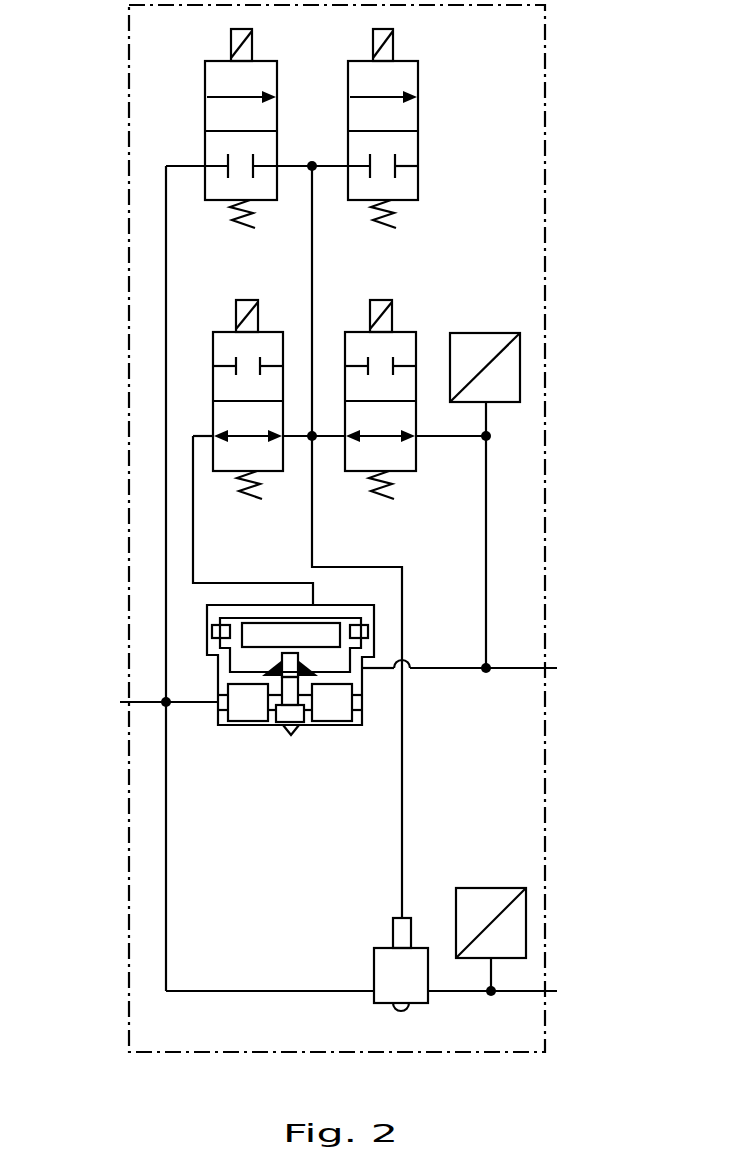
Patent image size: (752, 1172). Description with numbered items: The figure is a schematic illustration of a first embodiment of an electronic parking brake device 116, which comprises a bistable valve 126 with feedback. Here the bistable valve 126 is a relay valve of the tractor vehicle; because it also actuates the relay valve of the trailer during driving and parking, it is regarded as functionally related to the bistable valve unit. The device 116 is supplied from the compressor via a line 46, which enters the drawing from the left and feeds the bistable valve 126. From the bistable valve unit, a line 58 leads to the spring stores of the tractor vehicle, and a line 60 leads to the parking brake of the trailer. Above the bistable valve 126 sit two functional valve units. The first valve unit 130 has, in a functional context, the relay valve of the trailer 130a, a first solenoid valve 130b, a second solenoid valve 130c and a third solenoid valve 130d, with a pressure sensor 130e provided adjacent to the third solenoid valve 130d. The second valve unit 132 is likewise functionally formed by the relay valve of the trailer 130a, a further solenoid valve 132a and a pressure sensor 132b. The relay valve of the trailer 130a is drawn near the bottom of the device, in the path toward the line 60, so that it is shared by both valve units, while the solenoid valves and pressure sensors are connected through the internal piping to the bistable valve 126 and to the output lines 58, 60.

The electronic parking brake device 116 is at (110, 62).
The first valve unit 130 is at (110, 373).
The second valve unit 132 is at (296, 510).
The relay valve of the trailer 130a is at (387, 971).
The first solenoid valve 130b is at (218, 190).
The second solenoid valve 130c is at (220, 464).
The third solenoid valve 130d is at (405, 464).
The pressure sensor 130e is at (483, 333).
The further solenoid valve 132a is at (405, 190).
The pressure sensor 132b is at (490, 888).
The bistable valve 126 is at (268, 729).
The line 46 is at (120, 702).
The line 58 is at (552, 668).
The line 60 is at (552, 991).